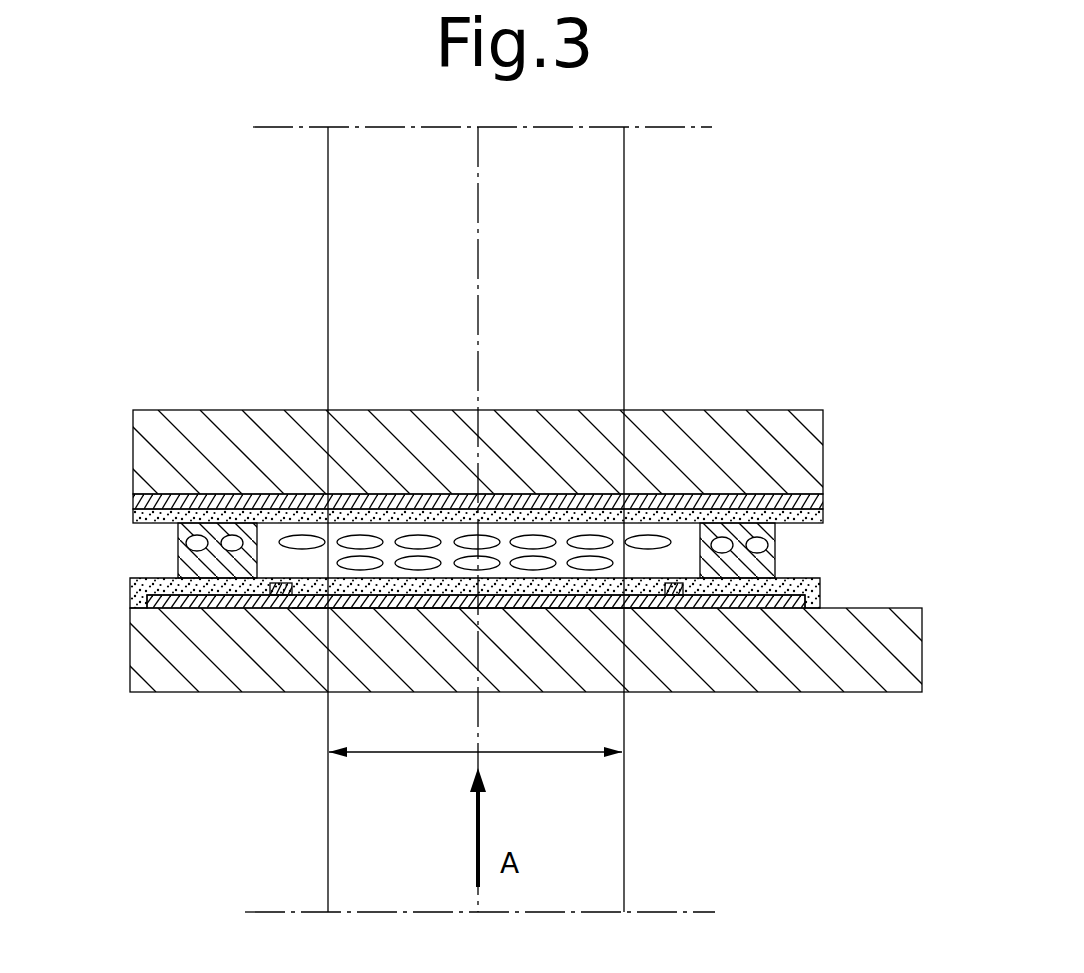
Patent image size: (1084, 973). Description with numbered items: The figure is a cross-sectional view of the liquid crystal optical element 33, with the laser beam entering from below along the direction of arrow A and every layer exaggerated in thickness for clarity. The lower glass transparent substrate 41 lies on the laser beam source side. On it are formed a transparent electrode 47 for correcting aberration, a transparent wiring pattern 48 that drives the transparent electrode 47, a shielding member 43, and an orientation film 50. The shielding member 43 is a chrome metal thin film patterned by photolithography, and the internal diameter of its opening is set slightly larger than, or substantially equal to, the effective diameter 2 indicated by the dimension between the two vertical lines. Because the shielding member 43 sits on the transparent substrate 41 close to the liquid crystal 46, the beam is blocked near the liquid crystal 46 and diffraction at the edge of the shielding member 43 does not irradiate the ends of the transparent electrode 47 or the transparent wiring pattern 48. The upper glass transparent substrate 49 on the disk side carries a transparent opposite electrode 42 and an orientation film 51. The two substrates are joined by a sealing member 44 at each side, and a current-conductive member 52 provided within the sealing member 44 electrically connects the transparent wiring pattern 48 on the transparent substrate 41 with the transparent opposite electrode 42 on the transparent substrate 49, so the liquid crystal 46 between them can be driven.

The liquid crystal optical element 33 is at (822, 293).
The transparent substrate 49 is at (697, 427).
The transparent opposite electrode 42 is at (823, 500).
The orientation film 51 is at (823, 517).
The sealing member 44 is at (776, 562).
The current-conductive member 52 is at (722, 540).
The liquid crystal 46 is at (392, 536).
The orientation film 50 is at (820, 588).
The shielding member 43 is at (805, 602).
The transparent wiring pattern 48 is at (280, 607).
The transparent electrode 47 is at (413, 608).
The transparent substrate 41 is at (787, 673).
The effective diameter 2 is at (475, 738).